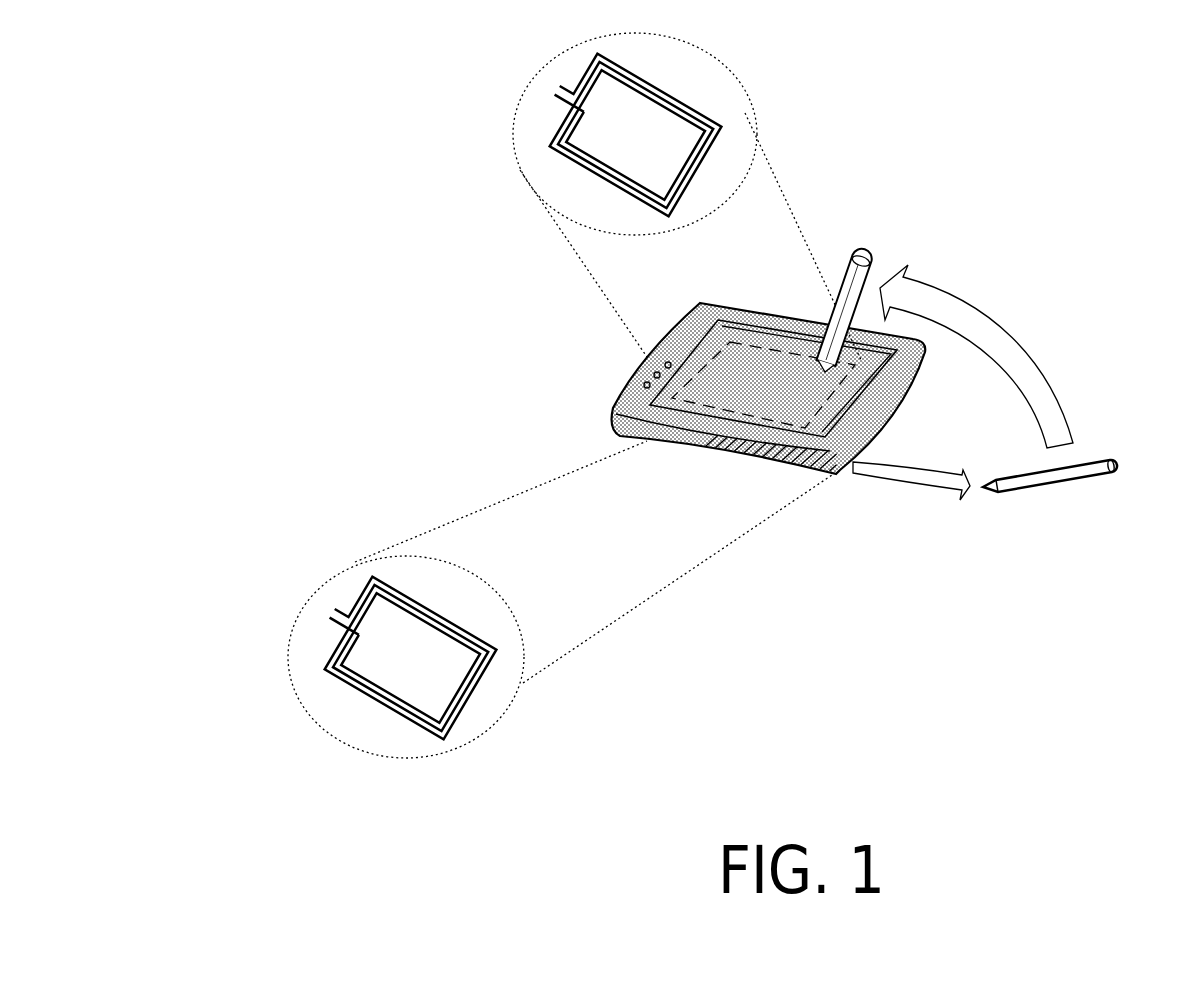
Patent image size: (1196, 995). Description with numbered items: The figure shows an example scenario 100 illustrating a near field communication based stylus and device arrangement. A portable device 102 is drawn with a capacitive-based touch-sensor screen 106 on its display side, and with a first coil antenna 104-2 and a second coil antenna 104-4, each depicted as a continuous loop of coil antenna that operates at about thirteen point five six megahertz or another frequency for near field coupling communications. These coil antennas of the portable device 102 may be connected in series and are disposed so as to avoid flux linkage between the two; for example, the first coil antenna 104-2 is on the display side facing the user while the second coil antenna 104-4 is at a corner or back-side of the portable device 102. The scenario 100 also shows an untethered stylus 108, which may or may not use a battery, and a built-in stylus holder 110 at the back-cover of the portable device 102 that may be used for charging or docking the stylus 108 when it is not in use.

The scenario 100 is at (266, 76).
The portable device 102 is at (610, 390).
The first coil antenna 104-2 is at (513, 117).
The second coil antenna 104-4 is at (330, 575).
The capacitive-based touch-sensor screen 106 is at (712, 322).
The stylus 108 is at (872, 248).
The built-in stylus holder 110 is at (765, 463).